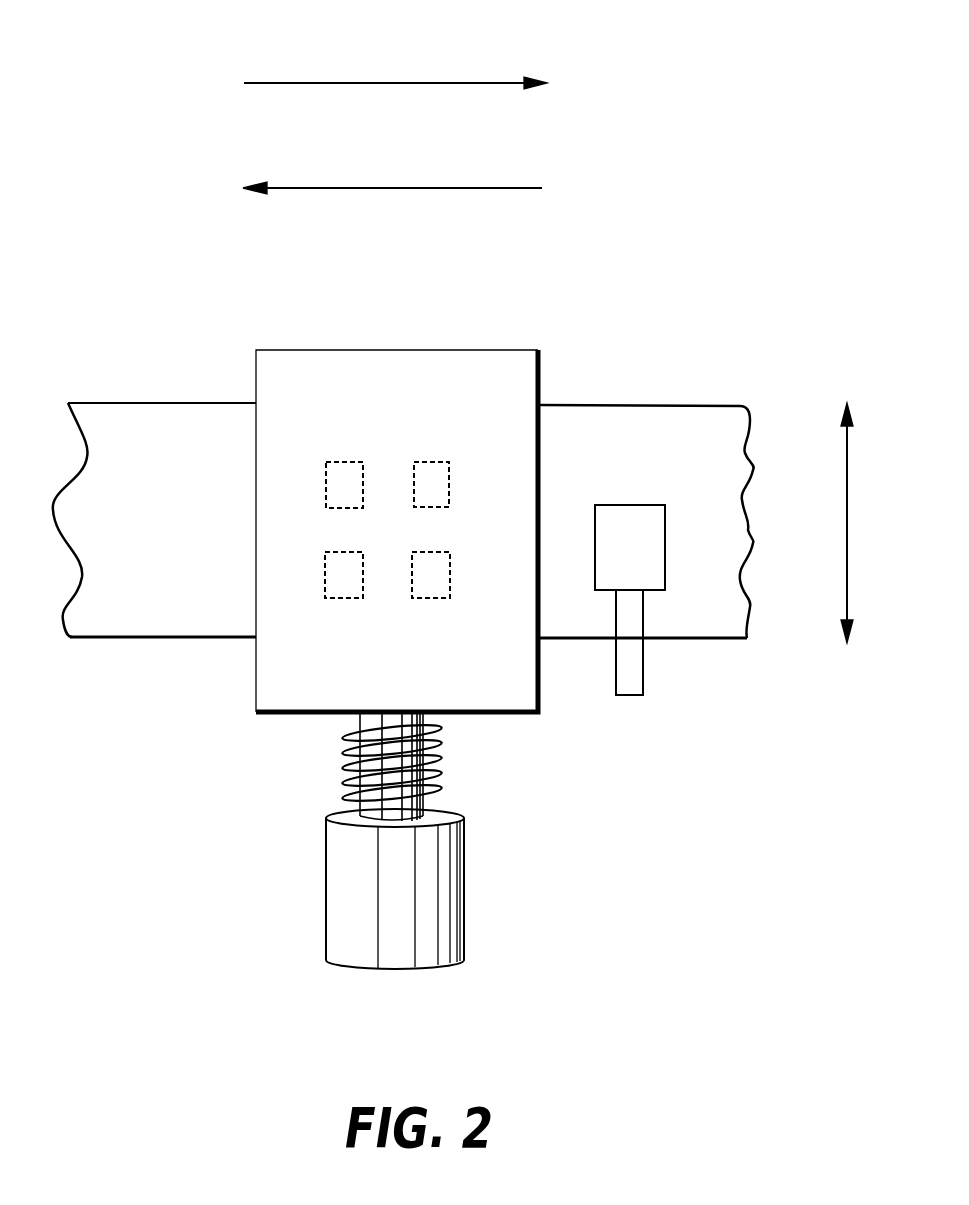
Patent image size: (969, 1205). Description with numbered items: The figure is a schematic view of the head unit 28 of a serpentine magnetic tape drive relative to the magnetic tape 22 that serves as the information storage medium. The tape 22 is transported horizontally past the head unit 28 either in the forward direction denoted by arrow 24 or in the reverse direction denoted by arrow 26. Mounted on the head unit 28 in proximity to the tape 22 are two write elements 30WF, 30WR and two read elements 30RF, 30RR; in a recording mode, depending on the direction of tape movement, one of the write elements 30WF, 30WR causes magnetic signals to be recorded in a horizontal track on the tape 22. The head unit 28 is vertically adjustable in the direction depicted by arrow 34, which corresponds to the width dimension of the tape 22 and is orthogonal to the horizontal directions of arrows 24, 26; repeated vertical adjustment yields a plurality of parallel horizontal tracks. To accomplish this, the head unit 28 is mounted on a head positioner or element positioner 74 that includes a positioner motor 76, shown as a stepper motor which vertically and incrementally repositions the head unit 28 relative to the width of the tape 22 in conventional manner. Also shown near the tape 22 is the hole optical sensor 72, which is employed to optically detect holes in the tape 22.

The magnetic tape 22 is at (663, 406).
The forward direction arrow 24 is at (370, 188).
The reverse direction arrow 26 is at (348, 83).
The head unit 28 is at (417, 350).
The reverse write element 30WR is at (338, 475).
The reverse read element 30RR is at (430, 483).
The forward read element 30RF is at (332, 570).
The forward write element 30WF is at (432, 577).
The vertical direction arrow 34 is at (847, 497).
The hole optical sensor 72 is at (648, 518).
The head positioner 74 is at (466, 760).
The positioner motor 76 is at (465, 890).